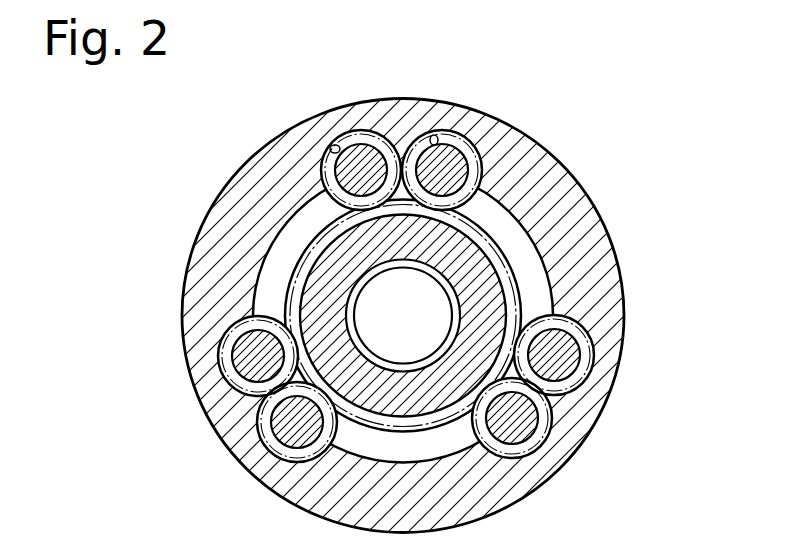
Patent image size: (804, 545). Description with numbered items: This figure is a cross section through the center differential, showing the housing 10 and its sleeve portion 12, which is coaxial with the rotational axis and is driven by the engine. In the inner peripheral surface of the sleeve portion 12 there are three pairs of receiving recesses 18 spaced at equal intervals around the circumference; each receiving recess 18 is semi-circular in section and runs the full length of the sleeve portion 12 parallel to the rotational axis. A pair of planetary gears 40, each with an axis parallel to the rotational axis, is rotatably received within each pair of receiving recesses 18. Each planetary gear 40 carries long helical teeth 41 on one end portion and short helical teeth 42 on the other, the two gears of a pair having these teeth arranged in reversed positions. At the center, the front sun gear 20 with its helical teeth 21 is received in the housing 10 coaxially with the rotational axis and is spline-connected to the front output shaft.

The housing 10 is at (552, 148).
The sleeve portion 12 is at (580, 177).
The receiving recess 18 is at (333, 151).
The front sun gear 20 is at (512, 258).
The helical teeth 21 is at (520, 283).
The planetary gear 40 is at (361, 160).
The long helical teeth 41 is at (383, 137).
The short helical teeth 42 is at (511, 124).